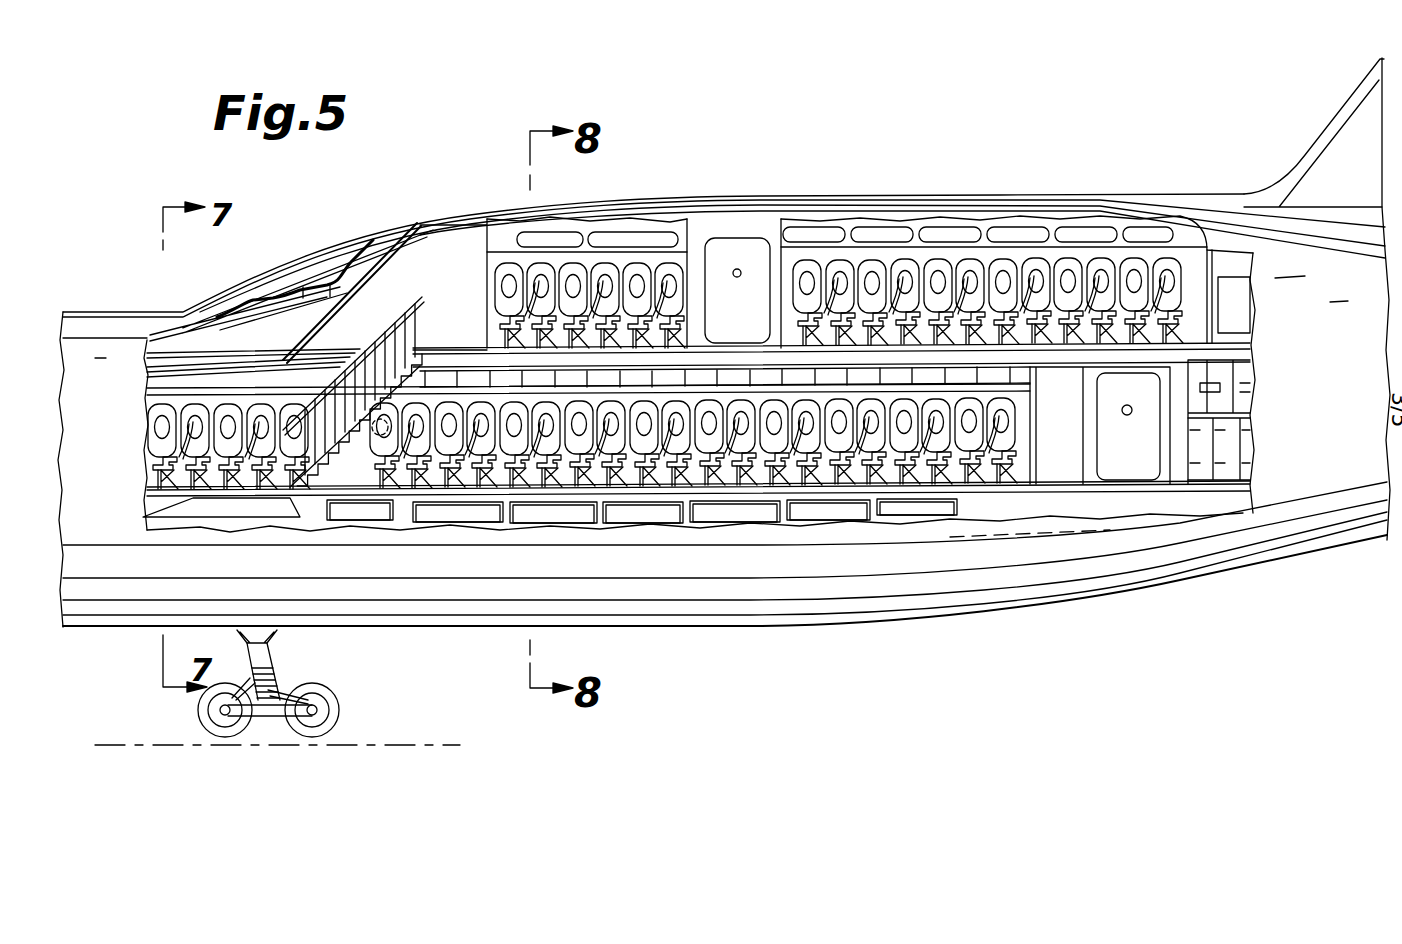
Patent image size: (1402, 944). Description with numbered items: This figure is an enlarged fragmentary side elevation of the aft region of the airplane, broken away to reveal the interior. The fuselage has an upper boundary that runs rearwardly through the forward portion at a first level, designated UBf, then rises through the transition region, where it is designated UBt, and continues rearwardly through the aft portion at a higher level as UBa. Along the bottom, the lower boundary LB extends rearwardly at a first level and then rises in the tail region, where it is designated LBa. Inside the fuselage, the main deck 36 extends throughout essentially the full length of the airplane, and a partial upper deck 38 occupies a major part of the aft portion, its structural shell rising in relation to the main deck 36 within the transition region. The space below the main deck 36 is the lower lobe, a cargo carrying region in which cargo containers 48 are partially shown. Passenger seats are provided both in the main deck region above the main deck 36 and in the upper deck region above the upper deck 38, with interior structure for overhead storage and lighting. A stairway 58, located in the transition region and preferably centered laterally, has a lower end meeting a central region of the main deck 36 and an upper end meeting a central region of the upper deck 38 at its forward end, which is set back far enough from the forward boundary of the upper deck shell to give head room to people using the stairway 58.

The main deck 36 is at (987, 490).
The upper deck 38 is at (1063, 350).
The cargo containers 48 is at (473, 513).
The stairway 58 is at (431, 287).
The upper boundary in the transition region UBt is at (351, 183).
The upper boundary in the forward portion UBf is at (110, 311).
The upper boundary in the aft portion UBa is at (1020, 195).
The lower boundary LB is at (368, 630).
The lower boundary in the tail region LBa is at (1157, 593).